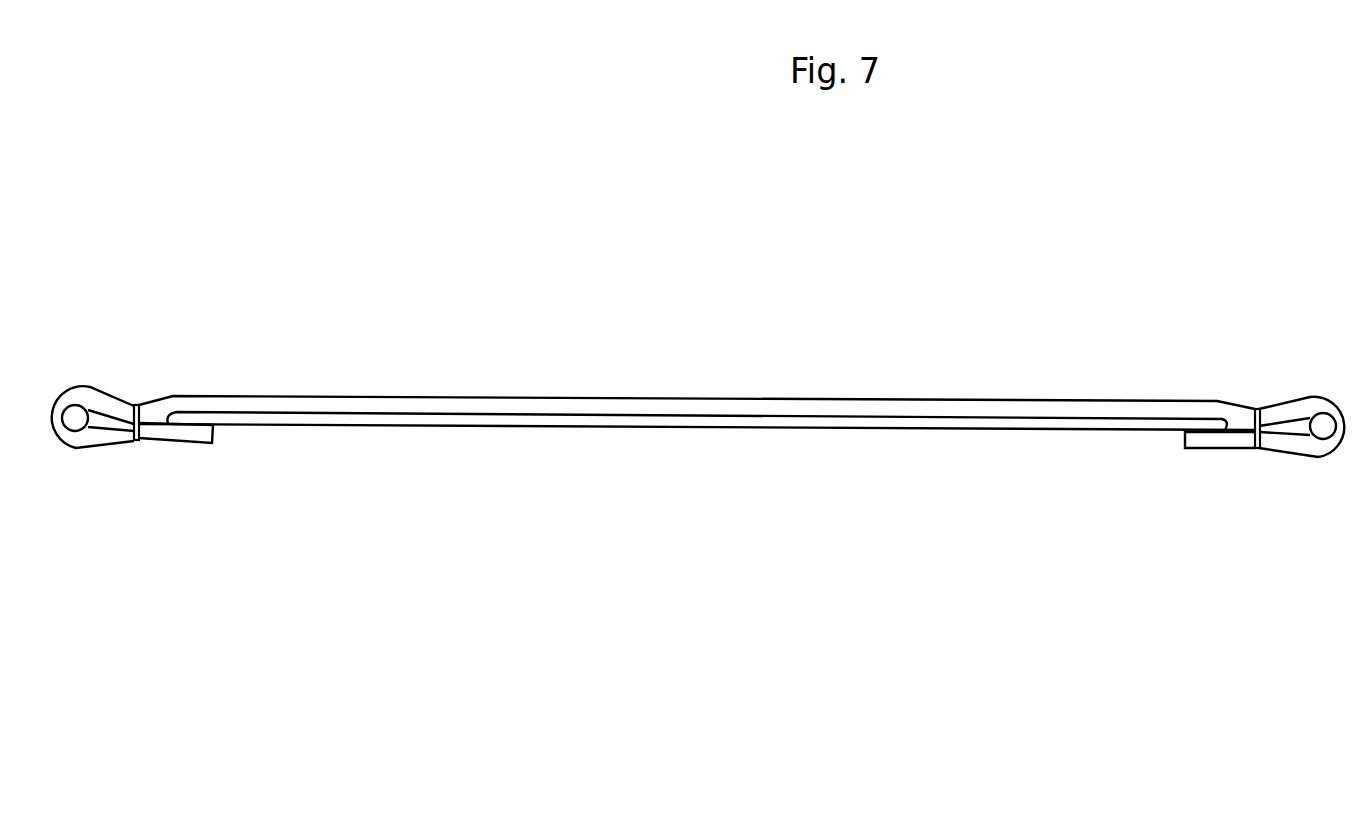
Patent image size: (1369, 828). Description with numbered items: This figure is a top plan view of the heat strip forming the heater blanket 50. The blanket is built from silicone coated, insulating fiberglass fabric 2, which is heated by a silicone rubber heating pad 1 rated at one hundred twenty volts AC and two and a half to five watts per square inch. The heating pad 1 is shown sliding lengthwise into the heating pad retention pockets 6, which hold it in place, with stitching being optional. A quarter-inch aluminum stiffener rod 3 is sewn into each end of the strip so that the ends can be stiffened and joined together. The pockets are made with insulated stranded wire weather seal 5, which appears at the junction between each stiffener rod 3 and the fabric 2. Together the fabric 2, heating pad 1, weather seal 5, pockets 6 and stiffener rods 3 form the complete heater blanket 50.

The heating pad 1 is at (650, 421).
The fiberglass fabric 2 is at (387, 405).
The aluminum stiffener rod 3 is at (75, 418).
The insulated stranded wire weather seal 5 is at (141, 402).
The heating pad retention pocket 6 is at (165, 440).
The heater blanket 50 is at (842, 298).